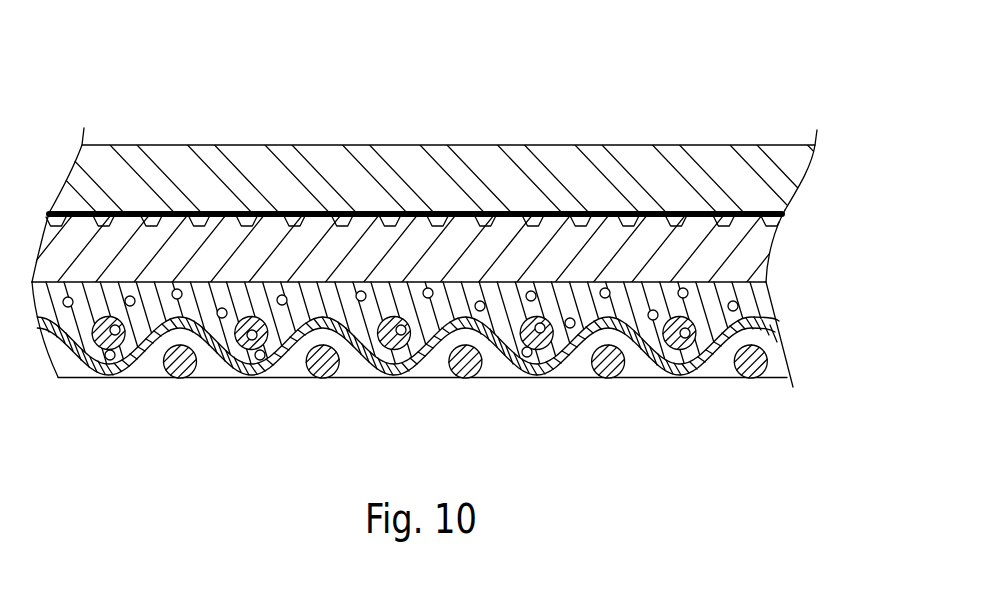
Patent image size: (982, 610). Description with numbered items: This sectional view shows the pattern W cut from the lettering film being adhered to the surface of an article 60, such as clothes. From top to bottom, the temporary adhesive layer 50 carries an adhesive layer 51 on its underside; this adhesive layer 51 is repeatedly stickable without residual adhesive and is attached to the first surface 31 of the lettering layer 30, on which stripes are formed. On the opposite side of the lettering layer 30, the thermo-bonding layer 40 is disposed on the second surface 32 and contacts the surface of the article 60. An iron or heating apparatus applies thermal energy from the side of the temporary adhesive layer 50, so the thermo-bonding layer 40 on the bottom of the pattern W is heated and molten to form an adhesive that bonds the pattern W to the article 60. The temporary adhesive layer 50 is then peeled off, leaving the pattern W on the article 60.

The temporary adhesive layer 50 is at (693, 140).
The adhesive layer 51 is at (512, 213).
The first surface 31 is at (218, 225).
The lettering layer 30 is at (327, 262).
The second surface 32 is at (115, 280).
The thermo-bonding layer 40 is at (760, 302).
The article 60 is at (296, 369).